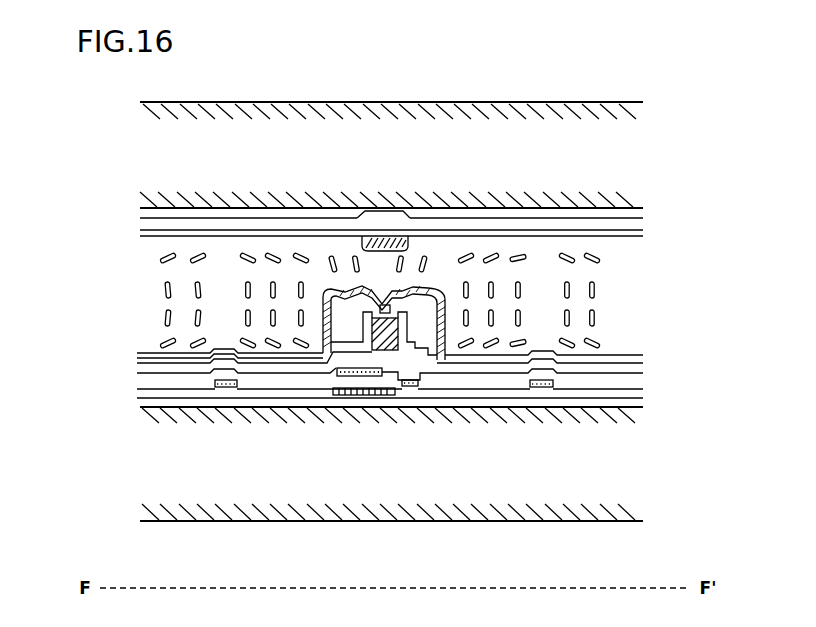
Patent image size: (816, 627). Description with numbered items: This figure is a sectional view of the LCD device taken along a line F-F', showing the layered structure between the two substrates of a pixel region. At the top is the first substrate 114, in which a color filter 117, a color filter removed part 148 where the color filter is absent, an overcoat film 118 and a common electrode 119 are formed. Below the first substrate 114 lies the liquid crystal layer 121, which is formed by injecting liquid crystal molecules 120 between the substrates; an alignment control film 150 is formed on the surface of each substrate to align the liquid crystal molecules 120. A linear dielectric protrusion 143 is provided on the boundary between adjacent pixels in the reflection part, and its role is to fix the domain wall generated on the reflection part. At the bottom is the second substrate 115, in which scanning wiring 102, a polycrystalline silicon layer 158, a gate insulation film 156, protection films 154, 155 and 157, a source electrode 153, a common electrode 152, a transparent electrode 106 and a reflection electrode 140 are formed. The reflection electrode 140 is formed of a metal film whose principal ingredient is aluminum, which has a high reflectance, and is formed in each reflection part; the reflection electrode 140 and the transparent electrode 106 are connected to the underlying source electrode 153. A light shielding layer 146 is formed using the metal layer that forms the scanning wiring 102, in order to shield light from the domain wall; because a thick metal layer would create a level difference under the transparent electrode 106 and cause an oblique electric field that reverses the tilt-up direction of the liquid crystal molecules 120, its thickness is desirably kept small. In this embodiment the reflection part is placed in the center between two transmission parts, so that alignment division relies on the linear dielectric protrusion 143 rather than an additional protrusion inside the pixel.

The first substrate 114 is at (613, 153).
The overcoat film 118 is at (628, 227).
The color filter 117 is at (437, 216).
The color filter removed part 148 is at (371, 211).
The common electrode 119 is at (157, 237).
The liquid crystal layer 121 is at (628, 265).
The linear dielectric protrusion 143 is at (375, 240).
The alignment control film 150 is at (160, 250).
The liquid crystal molecules 120 is at (598, 290).
The reflection electrode 140 is at (324, 320).
The source electrode 153 is at (384, 352).
The protection film 154 is at (660, 360).
The protection film 155 is at (632, 380).
The common electrode 152 is at (340, 378).
The scanning wiring 102 is at (410, 386).
The gate insulation film 156 is at (632, 391).
The light shielding layer 146 is at (547, 388).
The polycrystalline silicon layer 158 is at (368, 390).
The protection film 157 is at (632, 402).
The transparent electrode 106 is at (283, 358).
The second substrate 115 is at (603, 460).